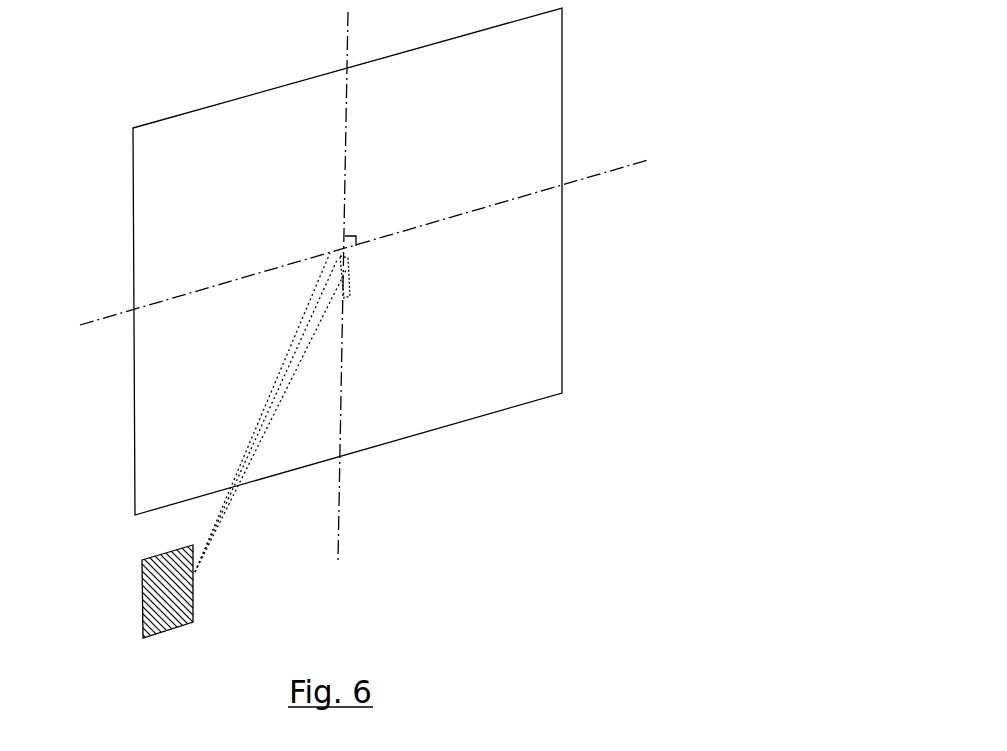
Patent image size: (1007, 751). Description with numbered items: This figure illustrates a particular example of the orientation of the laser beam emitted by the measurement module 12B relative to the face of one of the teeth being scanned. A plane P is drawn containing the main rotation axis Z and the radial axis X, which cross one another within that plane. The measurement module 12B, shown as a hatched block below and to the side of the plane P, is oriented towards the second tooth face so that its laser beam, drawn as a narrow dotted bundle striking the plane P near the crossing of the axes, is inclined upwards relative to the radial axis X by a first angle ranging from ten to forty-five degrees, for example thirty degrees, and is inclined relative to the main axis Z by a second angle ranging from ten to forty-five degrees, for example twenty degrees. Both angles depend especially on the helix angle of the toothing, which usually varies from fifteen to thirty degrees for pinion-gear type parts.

The plane P is at (545, 32).
The measurement module 12B is at (142, 636).
The radial axis X is at (367, 242).
The main axis Z is at (356, 282).